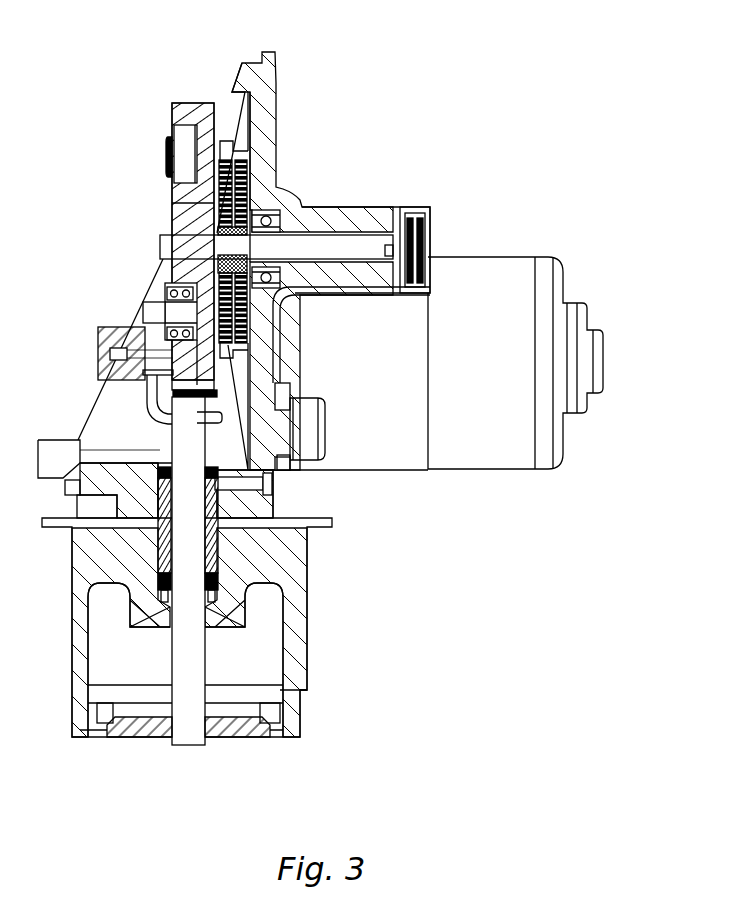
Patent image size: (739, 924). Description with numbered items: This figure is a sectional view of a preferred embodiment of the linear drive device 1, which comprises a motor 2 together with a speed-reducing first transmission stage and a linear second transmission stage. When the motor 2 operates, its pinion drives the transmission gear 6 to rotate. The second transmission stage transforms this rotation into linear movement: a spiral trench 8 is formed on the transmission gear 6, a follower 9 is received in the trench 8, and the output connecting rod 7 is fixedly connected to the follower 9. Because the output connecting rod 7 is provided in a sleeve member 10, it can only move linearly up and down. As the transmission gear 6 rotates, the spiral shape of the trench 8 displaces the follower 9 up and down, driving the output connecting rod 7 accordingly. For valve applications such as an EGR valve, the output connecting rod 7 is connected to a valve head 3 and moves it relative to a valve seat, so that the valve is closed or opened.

The linear drive device 1 is at (408, 65).
The motor 2 is at (470, 303).
The valve head 3 is at (235, 725).
The transmission gear 6 is at (193, 110).
The output connecting rod 7 is at (185, 693).
The spiral trench 8 is at (183, 153).
The follower 9 is at (170, 313).
The sleeve member 10 is at (213, 527).